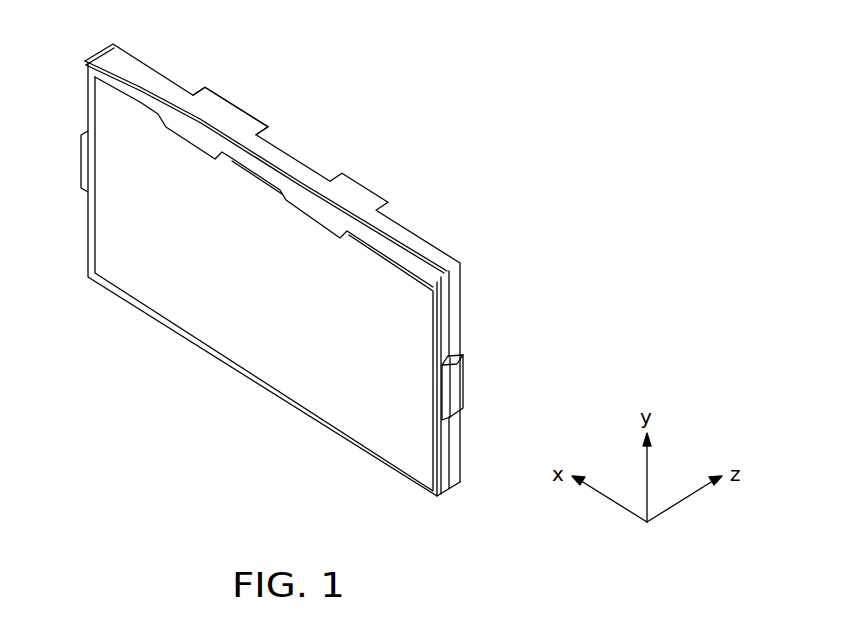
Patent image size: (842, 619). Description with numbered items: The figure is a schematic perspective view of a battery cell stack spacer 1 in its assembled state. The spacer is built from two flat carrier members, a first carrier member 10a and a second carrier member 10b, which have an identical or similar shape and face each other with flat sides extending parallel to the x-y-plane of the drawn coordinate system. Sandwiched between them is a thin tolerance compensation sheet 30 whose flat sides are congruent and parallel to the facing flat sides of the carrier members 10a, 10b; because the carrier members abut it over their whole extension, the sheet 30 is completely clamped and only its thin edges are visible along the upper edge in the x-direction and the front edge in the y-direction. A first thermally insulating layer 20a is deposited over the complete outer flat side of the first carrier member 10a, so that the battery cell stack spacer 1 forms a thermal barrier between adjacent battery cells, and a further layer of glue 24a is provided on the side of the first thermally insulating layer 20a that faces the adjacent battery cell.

The battery cell stack spacer 1 is at (336, 250).
The first carrier member 10a is at (261, 243).
The second carrier member 10b is at (168, 86).
The tolerance compensation sheet 30 is at (283, 153).
The first thermally insulating layer 20a is at (199, 313).
The layer of glue 24a is at (258, 384).